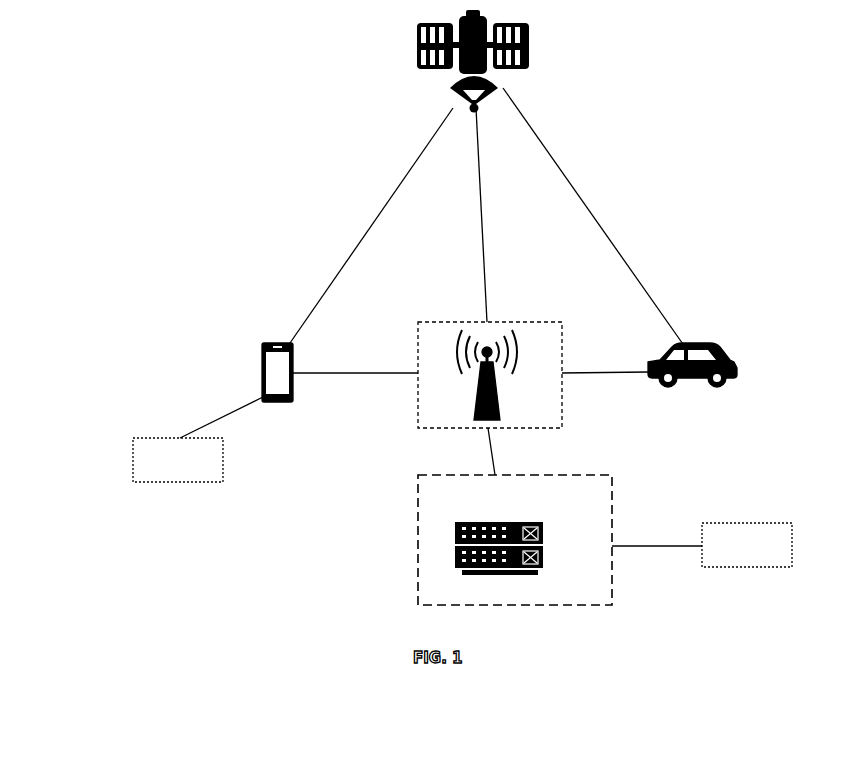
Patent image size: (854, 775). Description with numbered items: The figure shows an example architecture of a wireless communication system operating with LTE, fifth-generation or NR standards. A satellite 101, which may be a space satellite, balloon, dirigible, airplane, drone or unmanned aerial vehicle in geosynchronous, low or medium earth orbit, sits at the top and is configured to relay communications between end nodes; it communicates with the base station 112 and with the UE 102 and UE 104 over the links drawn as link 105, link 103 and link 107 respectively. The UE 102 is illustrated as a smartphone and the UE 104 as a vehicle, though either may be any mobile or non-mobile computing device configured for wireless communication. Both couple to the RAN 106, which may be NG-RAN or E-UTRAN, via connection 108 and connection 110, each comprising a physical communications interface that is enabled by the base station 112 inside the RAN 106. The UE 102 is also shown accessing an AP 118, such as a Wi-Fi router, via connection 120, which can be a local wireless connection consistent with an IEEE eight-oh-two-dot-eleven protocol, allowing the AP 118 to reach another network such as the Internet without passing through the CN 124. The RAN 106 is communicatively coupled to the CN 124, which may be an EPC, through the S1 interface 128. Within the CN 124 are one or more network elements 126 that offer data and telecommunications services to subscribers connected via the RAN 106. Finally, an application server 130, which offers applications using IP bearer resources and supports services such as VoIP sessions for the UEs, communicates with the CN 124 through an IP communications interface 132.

The satellite 101 is at (416, 46).
The UE 102 is at (283, 403).
The satellite-RAN link 103 is at (485, 213).
The UE 104 is at (729, 381).
The satellite-UE link 105 is at (394, 191).
The RAN 106 is at (522, 321).
The satellite-vehicle link 107 is at (569, 172).
The connection 108 is at (370, 372).
The connection 110 is at (586, 386).
The base station 112 is at (474, 398).
The AP 118 is at (133, 460).
The connection 120 is at (212, 419).
The CN 124 is at (572, 475).
The network elements 126 is at (544, 528).
The S1 interface 128 is at (493, 462).
The application server 130 is at (742, 523).
The IP communications interface 132 is at (656, 545).